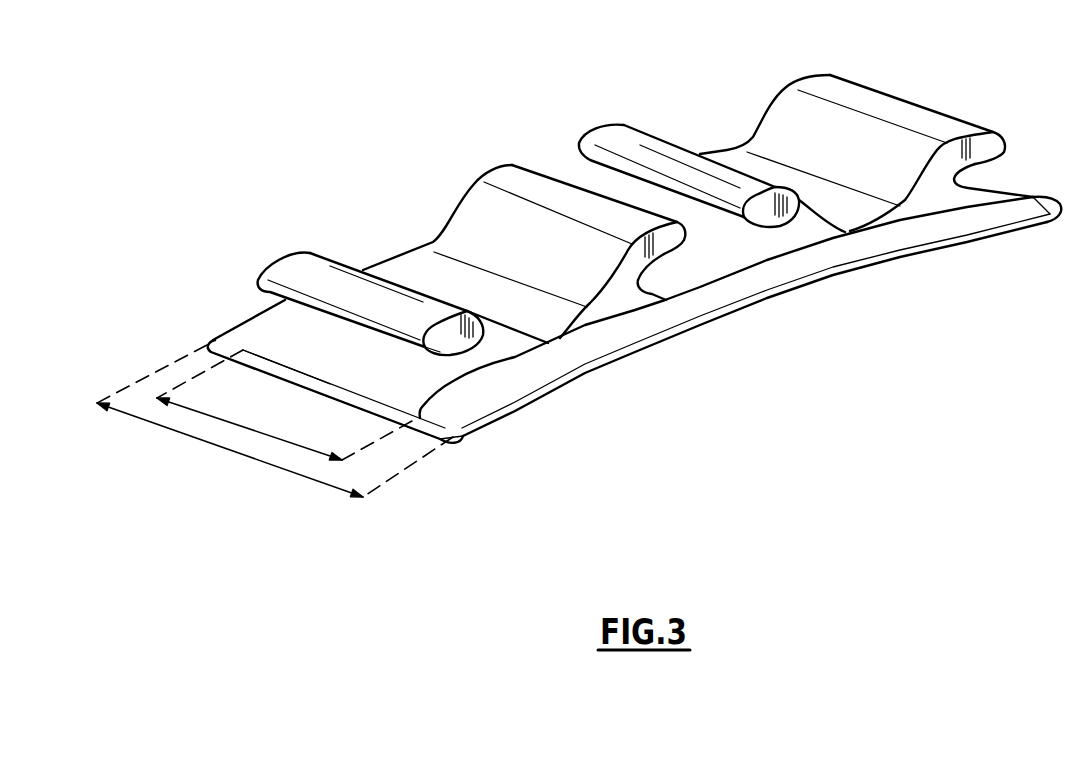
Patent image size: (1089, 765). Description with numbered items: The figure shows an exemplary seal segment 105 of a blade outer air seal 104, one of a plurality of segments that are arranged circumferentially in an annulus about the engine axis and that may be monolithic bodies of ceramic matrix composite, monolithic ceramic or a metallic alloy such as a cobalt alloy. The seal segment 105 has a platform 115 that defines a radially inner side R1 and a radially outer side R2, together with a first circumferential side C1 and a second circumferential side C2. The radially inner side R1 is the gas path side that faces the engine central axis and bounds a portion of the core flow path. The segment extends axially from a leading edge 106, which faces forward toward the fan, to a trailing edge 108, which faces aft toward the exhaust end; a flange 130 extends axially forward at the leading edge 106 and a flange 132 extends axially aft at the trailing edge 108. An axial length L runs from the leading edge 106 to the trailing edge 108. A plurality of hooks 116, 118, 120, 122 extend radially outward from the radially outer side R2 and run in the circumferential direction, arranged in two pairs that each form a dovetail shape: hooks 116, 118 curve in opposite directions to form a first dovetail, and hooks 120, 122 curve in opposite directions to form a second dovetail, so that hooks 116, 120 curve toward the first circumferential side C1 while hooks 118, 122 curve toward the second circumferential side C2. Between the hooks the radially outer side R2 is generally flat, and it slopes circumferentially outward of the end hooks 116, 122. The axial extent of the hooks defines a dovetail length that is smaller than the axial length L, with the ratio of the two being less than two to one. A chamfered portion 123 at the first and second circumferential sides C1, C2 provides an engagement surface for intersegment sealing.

The blade outer air seal 104 is at (218, 472).
The seal segment 105 is at (417, 432).
The leading edge 106 is at (638, 351).
The trailing edge 108 is at (400, 248).
The platform 115 is at (672, 277).
The hook 116 is at (295, 270).
The hook 118 is at (500, 177).
The hook 120 is at (607, 138).
The hook 122 is at (825, 87).
The chamfered portion 123 is at (983, 187).
The flange 130 is at (533, 377).
The flange 132 is at (238, 335).
The axial length L is at (162, 437).
The first circumferential side C1 is at (330, 400).
The second circumferential side C2 is at (1037, 200).
The radially inner side R1 is at (753, 312).
The radially outer side R2 is at (730, 247).